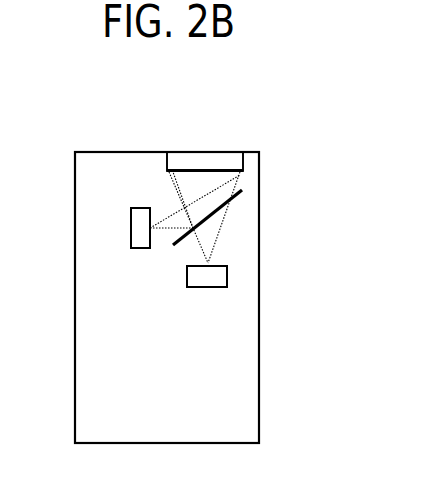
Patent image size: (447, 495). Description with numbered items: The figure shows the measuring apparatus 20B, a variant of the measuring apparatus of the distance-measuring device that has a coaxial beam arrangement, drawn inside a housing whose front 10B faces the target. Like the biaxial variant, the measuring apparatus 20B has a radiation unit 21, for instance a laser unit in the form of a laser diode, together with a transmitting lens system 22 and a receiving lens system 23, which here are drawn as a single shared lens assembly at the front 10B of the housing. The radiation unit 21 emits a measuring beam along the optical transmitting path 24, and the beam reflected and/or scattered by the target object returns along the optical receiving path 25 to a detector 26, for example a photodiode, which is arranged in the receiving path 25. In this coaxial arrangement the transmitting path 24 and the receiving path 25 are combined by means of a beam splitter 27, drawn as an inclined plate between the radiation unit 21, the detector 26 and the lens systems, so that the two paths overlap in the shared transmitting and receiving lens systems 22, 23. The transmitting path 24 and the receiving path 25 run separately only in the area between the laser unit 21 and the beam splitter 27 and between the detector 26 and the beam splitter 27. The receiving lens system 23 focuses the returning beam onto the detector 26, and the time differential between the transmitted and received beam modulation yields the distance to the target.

The front of the housing 10B is at (85, 152).
The measuring apparatus 20B is at (151, 133).
The radiation unit 21 is at (131, 228).
The transmitting lens system 22 is at (243, 153).
The receiving lens system 23 is at (205, 161).
The optical transmitting path 24 is at (177, 215).
The optical receiving path 25 is at (223, 224).
The detector 26 is at (227, 277).
The beam splitter 27 is at (242, 190).